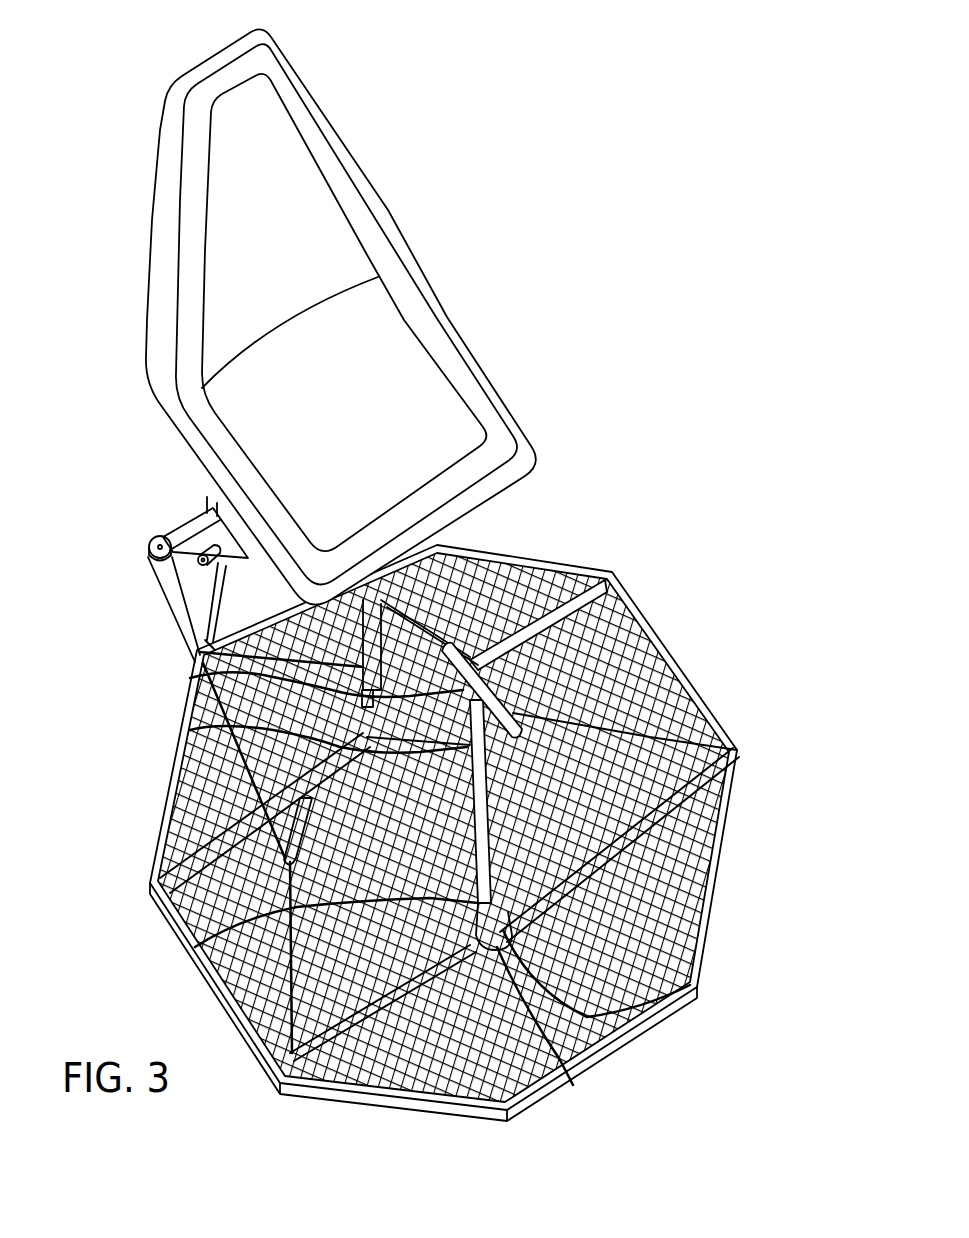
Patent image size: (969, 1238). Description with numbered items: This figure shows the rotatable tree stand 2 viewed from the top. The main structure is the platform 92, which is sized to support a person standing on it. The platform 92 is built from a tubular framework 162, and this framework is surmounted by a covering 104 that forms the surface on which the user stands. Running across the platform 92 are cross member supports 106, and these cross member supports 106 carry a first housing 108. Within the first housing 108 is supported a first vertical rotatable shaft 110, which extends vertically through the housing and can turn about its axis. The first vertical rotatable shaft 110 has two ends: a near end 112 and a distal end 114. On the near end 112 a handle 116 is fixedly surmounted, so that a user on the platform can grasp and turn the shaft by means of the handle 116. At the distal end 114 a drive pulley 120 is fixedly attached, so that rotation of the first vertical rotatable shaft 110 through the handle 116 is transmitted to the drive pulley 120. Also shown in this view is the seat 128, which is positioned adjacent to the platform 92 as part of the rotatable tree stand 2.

The rotatable tree stand 2 is at (624, 353).
The platform 92 is at (717, 862).
The covering 104 is at (707, 800).
The cross member supports 106 is at (612, 572).
The first housing 108 is at (197, 947).
The first vertical rotatable shaft 110 is at (190, 679).
The near end 112 is at (190, 731).
The distal end 114 is at (297, 967).
The handle 116 is at (515, 712).
The drive pulley 120 is at (563, 1060).
The seat 128 is at (390, 210).
The tubular framework 162 is at (730, 672).